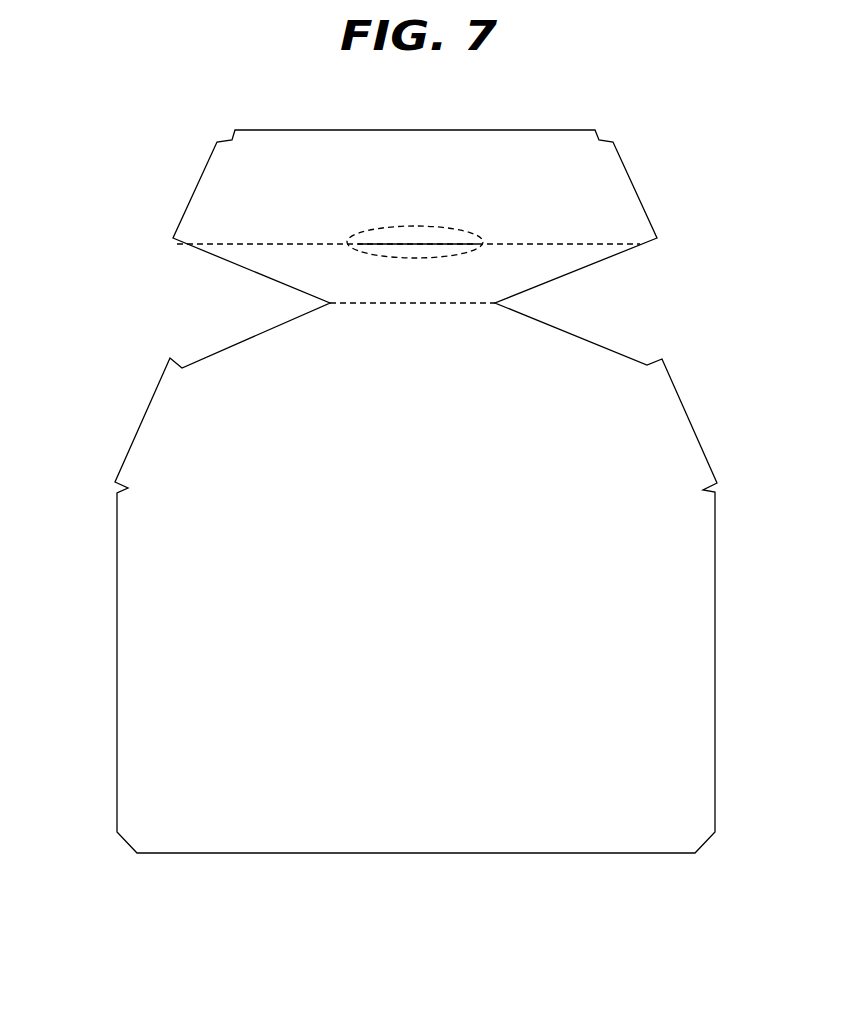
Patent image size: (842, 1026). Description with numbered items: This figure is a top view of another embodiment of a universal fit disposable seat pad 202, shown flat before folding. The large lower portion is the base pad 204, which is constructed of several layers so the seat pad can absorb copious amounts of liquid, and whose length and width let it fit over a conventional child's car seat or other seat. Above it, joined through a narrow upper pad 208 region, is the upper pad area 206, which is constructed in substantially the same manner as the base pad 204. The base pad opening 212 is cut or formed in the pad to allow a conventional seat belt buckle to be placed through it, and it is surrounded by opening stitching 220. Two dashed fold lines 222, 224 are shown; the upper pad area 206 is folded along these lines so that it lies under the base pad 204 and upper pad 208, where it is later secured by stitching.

The universal fit disposable seat pad 202 is at (135, 283).
The base pad 204 is at (443, 658).
The upper pad area 206 is at (247, 178).
The upper pad 208 is at (297, 270).
The base pad opening 212 is at (417, 243).
The opening stitching 220 is at (463, 233).
The fold line 222 is at (332, 245).
The fold line 224 is at (443, 305).